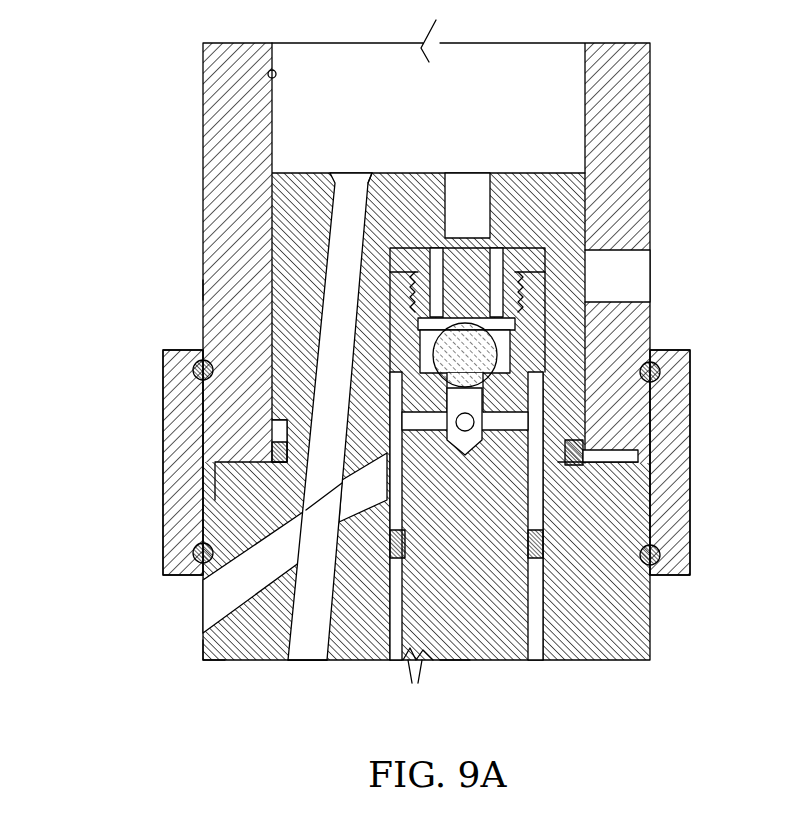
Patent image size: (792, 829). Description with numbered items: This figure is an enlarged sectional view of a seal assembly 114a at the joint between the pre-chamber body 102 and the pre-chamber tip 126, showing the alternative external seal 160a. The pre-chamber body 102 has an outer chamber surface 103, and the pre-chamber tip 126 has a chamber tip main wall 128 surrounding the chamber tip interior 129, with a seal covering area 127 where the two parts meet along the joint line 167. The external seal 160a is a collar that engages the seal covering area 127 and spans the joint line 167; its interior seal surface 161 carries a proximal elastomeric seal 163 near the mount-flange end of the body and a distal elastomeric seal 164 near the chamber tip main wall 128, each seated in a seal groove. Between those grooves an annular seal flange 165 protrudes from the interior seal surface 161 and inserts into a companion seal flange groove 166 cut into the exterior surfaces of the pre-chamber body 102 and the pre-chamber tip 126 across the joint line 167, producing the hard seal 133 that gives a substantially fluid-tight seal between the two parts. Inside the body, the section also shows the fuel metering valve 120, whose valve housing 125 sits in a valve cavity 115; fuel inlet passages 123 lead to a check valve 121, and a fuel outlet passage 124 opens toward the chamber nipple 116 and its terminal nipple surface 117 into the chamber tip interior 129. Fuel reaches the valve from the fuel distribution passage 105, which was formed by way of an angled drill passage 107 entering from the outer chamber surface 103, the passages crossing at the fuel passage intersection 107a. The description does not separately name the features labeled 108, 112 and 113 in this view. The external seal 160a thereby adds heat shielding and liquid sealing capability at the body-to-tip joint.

The pre-chamber body 102 is at (200, 641).
The outer chamber surface 103 is at (202, 660).
The fuel distribution passage 105 is at (305, 660).
The drill passage 107 is at (215, 617).
The fuel passage intersection 107a is at (323, 518).
The passage opening 108 is at (377, 180).
The seal 112 is at (577, 440).
The seal groove 113 is at (595, 460).
The seal assembly 114a is at (160, 373).
The valve cavity 115 is at (413, 681).
The chamber nipple 116 is at (297, 223).
The terminal nipple surface 117 is at (312, 173).
The fuel metering valve 120 is at (450, 665).
The check valve 121 is at (460, 352).
The fuel inlet passages 123 is at (480, 398).
The fuel outlet passage 124 is at (490, 185).
The valve housing 125 is at (500, 660).
The pre-chamber tip 126 is at (198, 165).
The seal covering area 127 is at (203, 292).
The chamber tip main wall 128 is at (245, 122).
The chamber tip interior 129 is at (268, 76).
The hard seal 133 is at (270, 258).
The external seal 160a is at (160, 413).
The interior seal surface 161 is at (205, 507).
The proximal elastomeric seal 163 is at (200, 546).
The distal elastomeric seal 164 is at (200, 360).
The annular seal flange 165 is at (215, 455).
The seal flange groove 166 is at (213, 475).
The joint line 167 is at (610, 467).